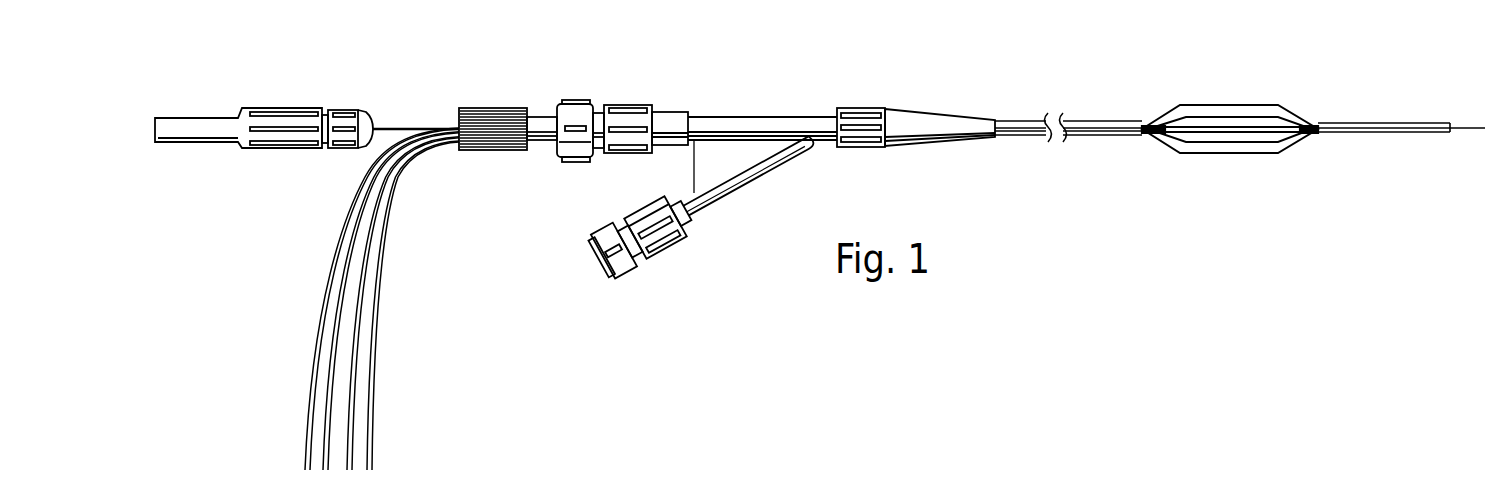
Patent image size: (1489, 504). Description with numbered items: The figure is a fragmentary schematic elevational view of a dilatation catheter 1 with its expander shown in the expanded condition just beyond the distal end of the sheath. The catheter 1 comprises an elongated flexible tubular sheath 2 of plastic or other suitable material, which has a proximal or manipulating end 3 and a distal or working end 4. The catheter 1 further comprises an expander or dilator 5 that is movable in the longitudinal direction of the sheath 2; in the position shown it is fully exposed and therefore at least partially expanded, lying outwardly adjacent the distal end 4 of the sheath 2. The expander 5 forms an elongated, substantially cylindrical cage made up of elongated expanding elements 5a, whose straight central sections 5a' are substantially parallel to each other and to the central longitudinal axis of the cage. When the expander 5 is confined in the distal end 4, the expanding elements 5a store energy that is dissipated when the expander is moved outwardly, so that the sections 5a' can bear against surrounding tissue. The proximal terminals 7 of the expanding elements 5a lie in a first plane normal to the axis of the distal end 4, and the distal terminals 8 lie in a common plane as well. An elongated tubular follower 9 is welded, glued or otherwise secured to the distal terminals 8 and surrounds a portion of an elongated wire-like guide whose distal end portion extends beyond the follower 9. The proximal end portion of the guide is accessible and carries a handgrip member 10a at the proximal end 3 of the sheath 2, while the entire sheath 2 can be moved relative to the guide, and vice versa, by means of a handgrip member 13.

The dilatation catheter 1 is at (1052, 172).
The sheath 2 is at (1010, 122).
The proximal end 3 is at (575, 167).
The distal end 4 is at (1304, 102).
The expander 5 is at (1230, 168).
The expanding elements 5a is at (1131, 163).
The central sections 5a' is at (1230, 110).
The proximal terminals 7 is at (1173, 118).
The distal terminals 8 is at (1297, 112).
The follower 9 is at (1380, 133).
The handgrip member 10a is at (265, 135).
The handgrip member 13 is at (477, 122).